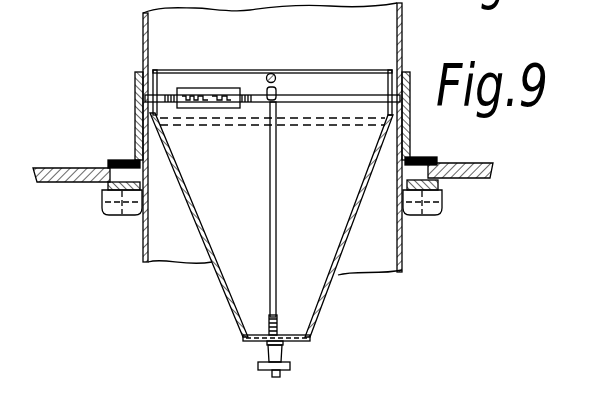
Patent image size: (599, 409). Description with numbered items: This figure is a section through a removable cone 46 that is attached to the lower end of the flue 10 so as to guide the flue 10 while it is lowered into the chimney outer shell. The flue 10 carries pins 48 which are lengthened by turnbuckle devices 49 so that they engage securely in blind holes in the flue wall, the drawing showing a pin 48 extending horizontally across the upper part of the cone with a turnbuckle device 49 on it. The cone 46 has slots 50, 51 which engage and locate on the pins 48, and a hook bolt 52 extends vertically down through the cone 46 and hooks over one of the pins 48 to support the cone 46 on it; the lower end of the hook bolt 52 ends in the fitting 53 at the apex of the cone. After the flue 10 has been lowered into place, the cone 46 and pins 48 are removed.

The flue 10 is at (143, 20).
The removable cone 46 is at (197, 205).
The pins 48 is at (278, 80).
The turnbuckle devices 49 is at (214, 88).
The slot 50 is at (157, 80).
The slot 51 is at (271, 73).
The hook bolt 52 is at (280, 205).
The bottom fitting 53 is at (288, 364).